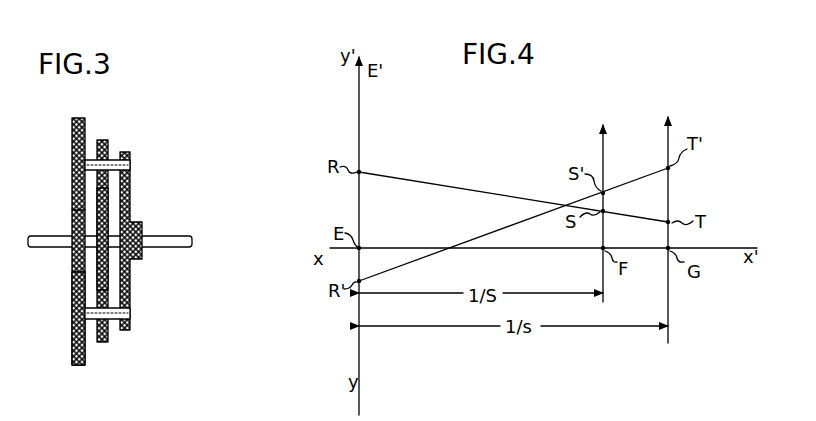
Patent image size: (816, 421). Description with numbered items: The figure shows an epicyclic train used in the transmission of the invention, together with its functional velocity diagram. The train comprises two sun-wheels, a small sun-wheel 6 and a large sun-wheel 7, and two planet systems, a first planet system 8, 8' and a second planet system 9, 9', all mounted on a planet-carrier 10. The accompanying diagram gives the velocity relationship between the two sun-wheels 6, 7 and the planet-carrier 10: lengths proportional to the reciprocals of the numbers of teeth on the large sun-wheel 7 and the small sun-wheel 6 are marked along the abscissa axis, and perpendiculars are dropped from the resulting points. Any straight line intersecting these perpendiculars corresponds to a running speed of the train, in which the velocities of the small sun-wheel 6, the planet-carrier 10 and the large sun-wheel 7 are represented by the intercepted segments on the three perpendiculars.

In FIG. 3, the small sun-wheel 6 is at (72, 260).
In FIG. 4, the small sun-wheel 6 is at (672, 186).
In FIG. 3, the large sun-wheel 7 is at (105, 206).
In FIG. 4, the large sun-wheel 7 is at (606, 152).
In FIG. 3, the planet 8 is at (61, 241).
In FIG. 3, the planet 8' is at (61, 323).
In FIG. 3, the planet 9 is at (115, 221).
In FIG. 3, the planet 9' is at (129, 355).
In FIG. 3, the planet-carrier 10 is at (129, 279).
In FIG. 4, the planet-carrier 10 is at (362, 152).